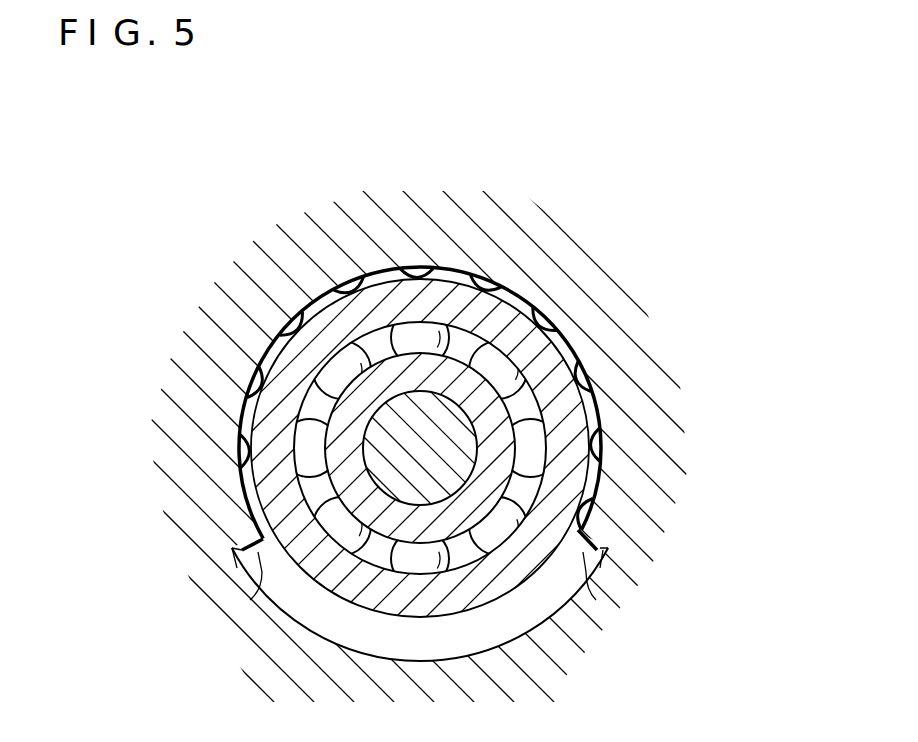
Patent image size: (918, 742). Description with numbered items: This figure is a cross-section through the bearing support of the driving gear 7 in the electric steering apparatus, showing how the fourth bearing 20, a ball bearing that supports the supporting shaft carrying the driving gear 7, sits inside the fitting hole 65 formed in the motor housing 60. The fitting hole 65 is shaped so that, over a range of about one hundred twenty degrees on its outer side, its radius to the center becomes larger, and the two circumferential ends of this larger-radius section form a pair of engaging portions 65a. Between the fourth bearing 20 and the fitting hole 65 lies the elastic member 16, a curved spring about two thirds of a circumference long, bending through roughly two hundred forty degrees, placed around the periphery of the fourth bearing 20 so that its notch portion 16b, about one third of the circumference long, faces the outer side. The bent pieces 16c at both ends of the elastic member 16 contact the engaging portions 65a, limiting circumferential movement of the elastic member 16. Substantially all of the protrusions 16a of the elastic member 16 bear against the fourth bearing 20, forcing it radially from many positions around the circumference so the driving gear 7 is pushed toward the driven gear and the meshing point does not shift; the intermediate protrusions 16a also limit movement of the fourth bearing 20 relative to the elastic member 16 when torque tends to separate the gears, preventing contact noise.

The driving gear 7 is at (412, 405).
The motor housing 60 is at (502, 222).
The fitting hole 65 is at (410, 424).
The engaging portion 65a is at (237, 549).
The elastic member 16 is at (484, 501).
The protrusion 16a is at (590, 397).
The notch portion 16b is at (565, 537).
The bent piece 16c is at (245, 562).
The fourth bearing 20 is at (583, 480).